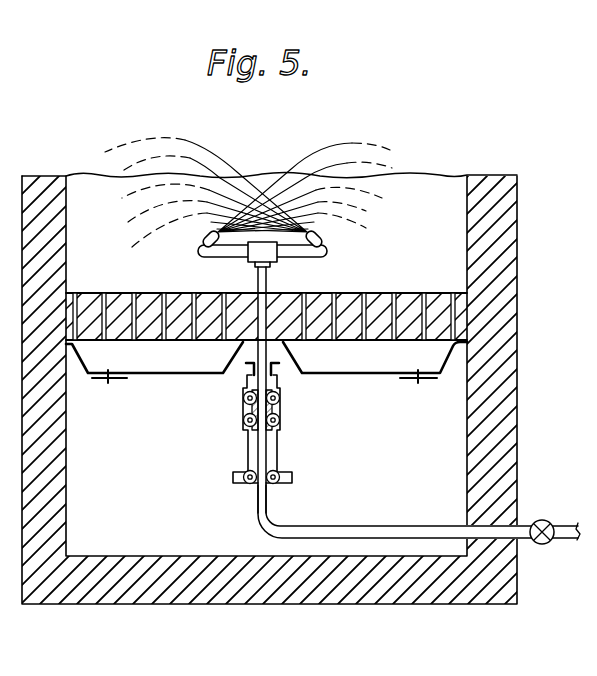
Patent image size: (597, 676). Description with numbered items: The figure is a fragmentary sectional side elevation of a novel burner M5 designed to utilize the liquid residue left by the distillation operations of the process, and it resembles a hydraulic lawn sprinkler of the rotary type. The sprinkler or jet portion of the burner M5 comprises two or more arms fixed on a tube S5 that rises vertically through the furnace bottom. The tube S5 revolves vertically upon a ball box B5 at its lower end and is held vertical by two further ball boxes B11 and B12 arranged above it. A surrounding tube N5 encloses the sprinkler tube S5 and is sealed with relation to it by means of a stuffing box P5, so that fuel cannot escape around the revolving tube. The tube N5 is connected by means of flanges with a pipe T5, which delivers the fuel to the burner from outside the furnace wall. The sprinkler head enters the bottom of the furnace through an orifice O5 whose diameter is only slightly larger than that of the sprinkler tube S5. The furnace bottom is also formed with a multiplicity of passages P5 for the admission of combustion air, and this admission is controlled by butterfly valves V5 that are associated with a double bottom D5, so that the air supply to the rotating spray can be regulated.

The burner M5 is at (320, 236).
The orifice O5 is at (250, 316).
The stuffing box P5 is at (133, 293).
The tube S5 is at (267, 271).
The double bottom D5 is at (160, 375).
The butterfly valves V5 is at (100, 388).
The tube N5 is at (245, 440).
The ball box B11 is at (283, 397).
The ball box B12 is at (284, 423).
The ball box B5 is at (243, 484).
The pipe T5 is at (343, 527).